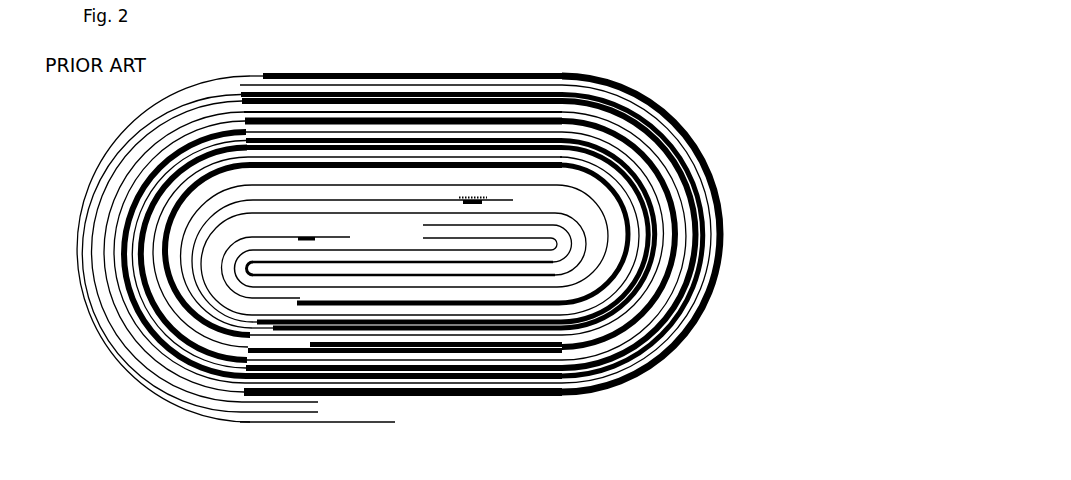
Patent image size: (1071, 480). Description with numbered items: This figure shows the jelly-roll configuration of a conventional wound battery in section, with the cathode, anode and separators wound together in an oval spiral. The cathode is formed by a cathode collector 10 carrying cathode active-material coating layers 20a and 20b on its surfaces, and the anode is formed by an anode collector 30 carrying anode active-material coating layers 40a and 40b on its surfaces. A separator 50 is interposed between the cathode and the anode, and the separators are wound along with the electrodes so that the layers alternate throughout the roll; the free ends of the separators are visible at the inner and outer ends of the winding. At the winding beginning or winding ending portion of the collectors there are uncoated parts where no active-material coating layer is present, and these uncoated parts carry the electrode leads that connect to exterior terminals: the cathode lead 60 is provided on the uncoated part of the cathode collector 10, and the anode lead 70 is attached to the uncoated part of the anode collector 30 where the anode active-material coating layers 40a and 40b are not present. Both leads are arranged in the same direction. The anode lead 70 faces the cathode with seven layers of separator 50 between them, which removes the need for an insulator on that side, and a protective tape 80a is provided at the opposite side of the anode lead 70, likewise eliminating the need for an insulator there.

The cathode collector 10 is at (336, 73).
The cathode active-material coating layer 20a is at (458, 118).
The cathode active-material coating layer 20b is at (409, 98).
The anode collector 30 is at (368, 193).
The anode active-material coating layer 40a is at (718, 211).
The anode active-material coating layer 40b is at (718, 238).
The separator 50 is at (422, 225).
The cathode lead 60 is at (316, 236).
The anode lead 70 is at (485, 202).
The protective tape 80a is at (480, 186).